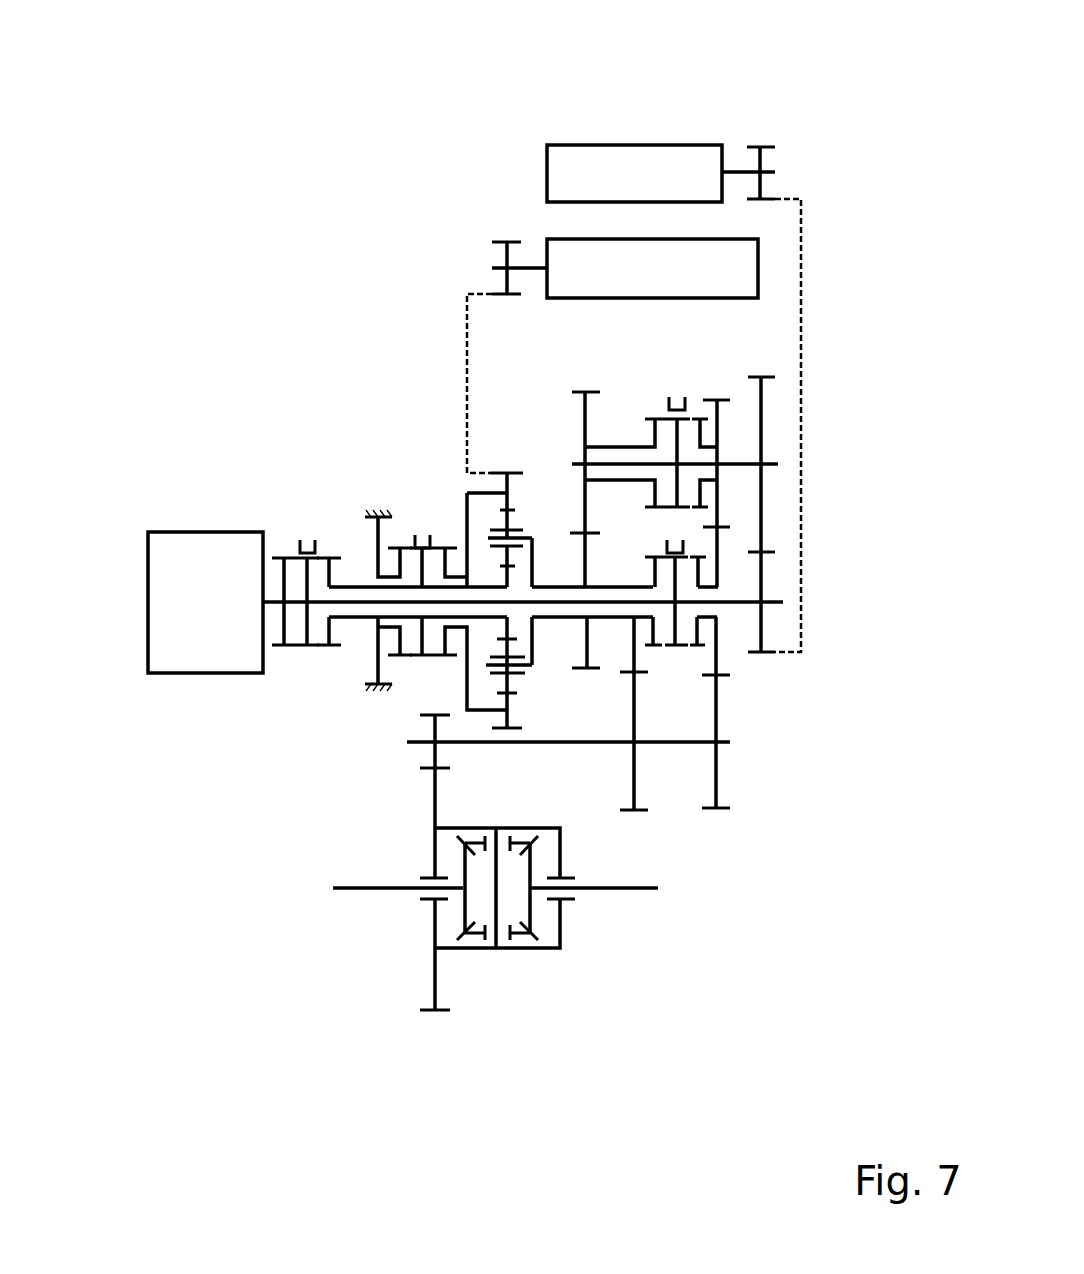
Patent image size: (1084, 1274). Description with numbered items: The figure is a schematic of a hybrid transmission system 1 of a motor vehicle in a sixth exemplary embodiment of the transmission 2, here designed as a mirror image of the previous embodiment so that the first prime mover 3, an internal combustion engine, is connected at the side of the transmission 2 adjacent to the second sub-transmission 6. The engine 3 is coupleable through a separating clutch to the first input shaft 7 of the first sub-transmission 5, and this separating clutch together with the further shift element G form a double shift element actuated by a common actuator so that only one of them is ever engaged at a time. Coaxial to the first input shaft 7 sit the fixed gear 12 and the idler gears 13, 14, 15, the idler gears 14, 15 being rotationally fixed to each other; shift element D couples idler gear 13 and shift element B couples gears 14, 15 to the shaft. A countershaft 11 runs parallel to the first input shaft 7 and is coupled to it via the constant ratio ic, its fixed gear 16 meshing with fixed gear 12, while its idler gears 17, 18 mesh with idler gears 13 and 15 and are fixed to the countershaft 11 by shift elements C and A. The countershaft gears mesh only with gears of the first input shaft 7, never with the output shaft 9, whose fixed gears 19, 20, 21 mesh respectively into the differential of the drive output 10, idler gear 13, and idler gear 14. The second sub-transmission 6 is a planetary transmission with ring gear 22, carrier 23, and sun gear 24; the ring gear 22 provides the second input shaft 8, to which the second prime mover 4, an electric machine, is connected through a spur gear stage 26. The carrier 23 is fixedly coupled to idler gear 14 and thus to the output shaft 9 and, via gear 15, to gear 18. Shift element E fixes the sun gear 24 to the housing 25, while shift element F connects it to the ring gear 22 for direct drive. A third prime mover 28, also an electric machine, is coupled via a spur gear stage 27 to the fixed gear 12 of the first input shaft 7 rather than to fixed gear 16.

The transmission system 1 is at (268, 135).
The transmission 2 is at (240, 858).
The first prime mover 3 is at (220, 627).
The second prime mover 4 is at (672, 270).
The first sub-transmission 5 is at (787, 808).
The second sub-transmission 6 is at (242, 722).
The first input shaft 7 is at (770, 602).
The second input shaft 8 is at (507, 483).
The output shaft 9 is at (537, 743).
The drive output 10 is at (502, 975).
The countershaft 11 is at (583, 463).
The fixed gear 12 is at (762, 577).
The idler gear 13 is at (718, 555).
The idler gear 14 is at (655, 585).
The idler gear 15 is at (676, 592).
The fixed gear 16 is at (763, 418).
The idler gear 17 is at (718, 423).
The idler gear 18 is at (588, 437).
The gearwheel 19 is at (432, 752).
The gearwheel 20 is at (720, 698).
The gearwheel 21 is at (635, 707).
The ring gear 22 is at (501, 530).
The carrier 23 is at (490, 537).
The sun gear 24 is at (507, 567).
The housing 25 is at (368, 687).
The spur gear stage 26 is at (464, 357).
The spur gear stage 27 is at (802, 358).
The third prime mover 28 is at (698, 172).